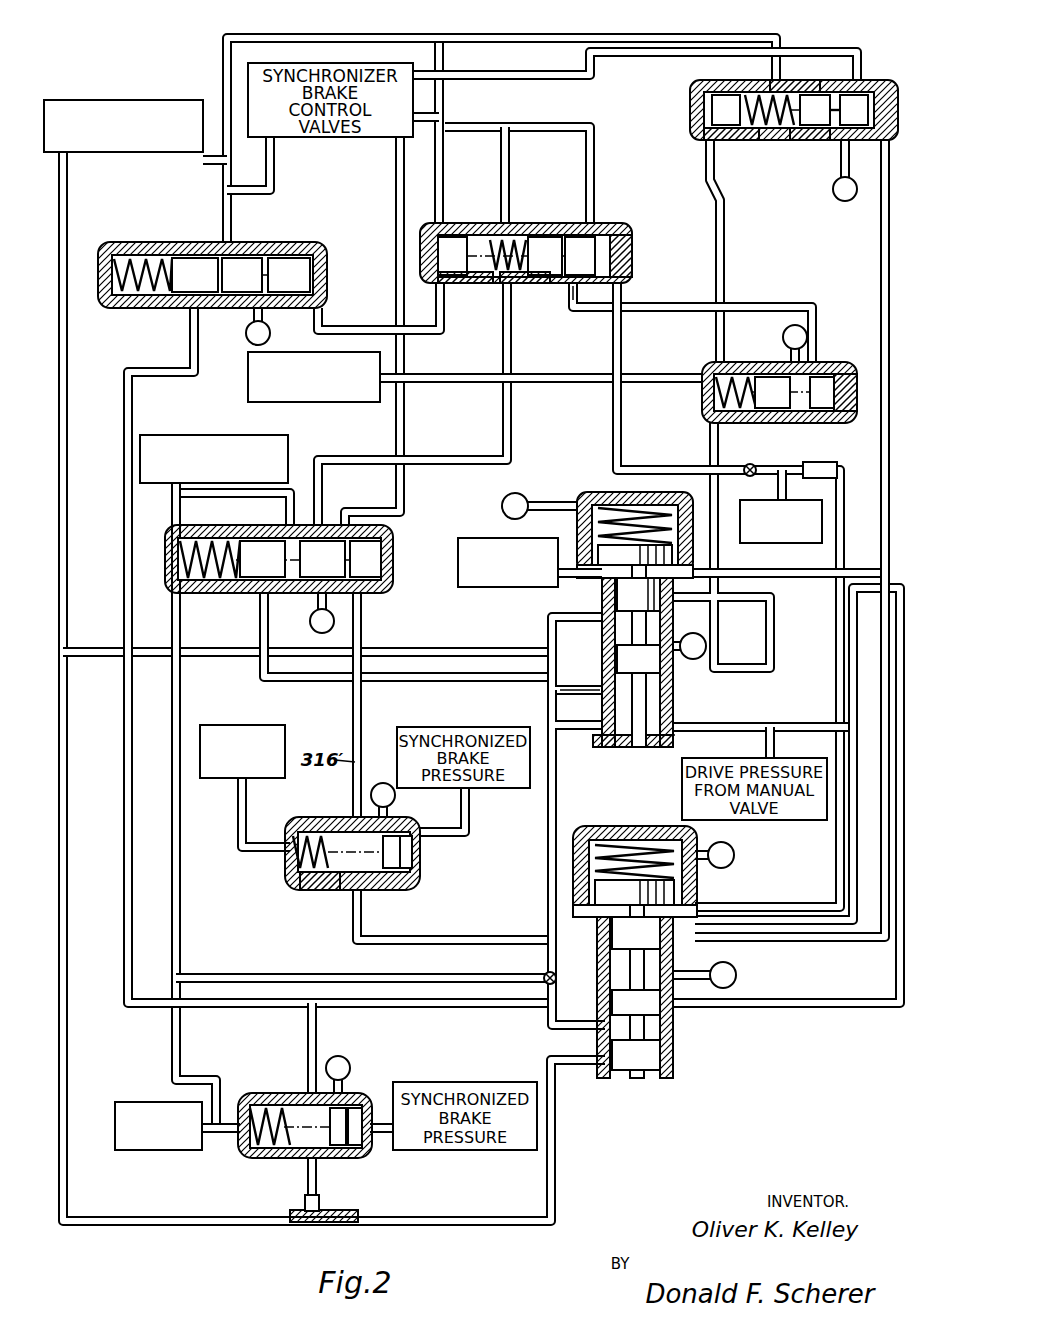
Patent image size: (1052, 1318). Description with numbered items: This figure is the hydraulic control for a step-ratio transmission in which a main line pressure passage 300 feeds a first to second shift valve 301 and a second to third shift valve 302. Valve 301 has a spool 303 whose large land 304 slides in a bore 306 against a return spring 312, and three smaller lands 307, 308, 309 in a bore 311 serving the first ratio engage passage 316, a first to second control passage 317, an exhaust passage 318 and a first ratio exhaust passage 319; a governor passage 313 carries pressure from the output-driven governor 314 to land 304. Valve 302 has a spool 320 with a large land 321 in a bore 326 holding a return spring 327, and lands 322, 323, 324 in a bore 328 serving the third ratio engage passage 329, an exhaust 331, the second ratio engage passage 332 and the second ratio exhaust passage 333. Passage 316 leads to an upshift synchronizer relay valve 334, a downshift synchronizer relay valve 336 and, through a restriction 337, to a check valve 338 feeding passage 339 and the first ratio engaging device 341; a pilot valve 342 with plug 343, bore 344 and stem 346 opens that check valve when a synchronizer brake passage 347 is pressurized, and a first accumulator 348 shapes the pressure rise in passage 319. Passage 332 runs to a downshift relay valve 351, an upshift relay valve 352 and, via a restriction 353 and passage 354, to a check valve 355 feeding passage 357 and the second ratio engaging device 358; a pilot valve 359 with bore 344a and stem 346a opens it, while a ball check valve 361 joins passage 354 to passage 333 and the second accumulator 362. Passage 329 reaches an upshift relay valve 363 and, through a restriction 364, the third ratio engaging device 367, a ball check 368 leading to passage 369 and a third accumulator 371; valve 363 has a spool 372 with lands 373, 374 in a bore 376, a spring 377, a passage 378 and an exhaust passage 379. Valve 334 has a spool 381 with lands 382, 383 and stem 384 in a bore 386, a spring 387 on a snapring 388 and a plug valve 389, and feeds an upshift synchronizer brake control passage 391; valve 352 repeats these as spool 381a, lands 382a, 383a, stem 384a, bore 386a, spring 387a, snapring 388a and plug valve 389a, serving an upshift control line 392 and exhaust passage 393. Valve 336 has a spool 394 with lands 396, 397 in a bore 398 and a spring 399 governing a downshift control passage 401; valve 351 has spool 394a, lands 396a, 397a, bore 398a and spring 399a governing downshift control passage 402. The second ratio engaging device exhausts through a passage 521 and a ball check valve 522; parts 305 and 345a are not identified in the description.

The main line pressure passage 300 is at (780, 718).
The first to second shift valve 301 is at (630, 748).
The second to third shift valve 302 is at (614, 1085).
The valve spool 303 is at (602, 690).
The large diameter land 304 is at (634, 578).
The piston 305 is at (600, 512).
The bore 306 is at (600, 510).
The land 307 is at (600, 588).
The land 308 is at (602, 655).
The land 309 is at (668, 735).
The bore 311 is at (550, 636).
The return spring 312 is at (612, 507).
The governor passage 313 is at (830, 582).
The output-driven governor 314 is at (465, 588).
The first ratio engage passage 316 is at (462, 680).
The first to second ratio control passage 317 is at (558, 797).
The exhaust passage 318 is at (708, 652).
The first ratio exhaust passage 319 is at (385, 458).
The valve spool 320 is at (648, 1035).
The large diameter land 321 is at (680, 893).
The land 322 is at (610, 930).
The land 323 is at (662, 1008).
The land 324 is at (645, 1068).
The bore 326 is at (605, 845).
The return spring 327 is at (712, 848).
The bore 328 is at (598, 975).
The third ratio engage passage 329 is at (775, 950).
The exhaust passage 331 is at (734, 985).
The second ratio engage passage 332 is at (488, 1005).
The second ratio exhaust passage 333 is at (444, 105).
The upshift synchronizer relay valve 334 is at (636, 258).
The downshift synchronizer relay valve 336 is at (393, 568).
The restriction 337 is at (360, 715).
The check valve 338 is at (330, 824).
The passage 339 is at (242, 853).
The first ratio engaging device 341 is at (228, 725).
The pilot valve 342 is at (402, 870).
The plug 343 is at (398, 835).
The bore 344 is at (413, 848).
The bore 344a is at (345, 1106).
The exhaust 345a is at (350, 1065).
The stem 346 is at (335, 890).
The stem 346a is at (345, 1160).
The synchronizer brake passage 347 is at (470, 832).
The first accumulator 348 is at (180, 435).
The downshift synchronizer relay valve 351 is at (330, 296).
The upshift synchronizer relay valve 352 is at (792, 205).
The restriction 353 is at (320, 1045).
The passage 354 is at (290, 1093).
The check valve 355 is at (265, 1148).
The passage 357 is at (214, 1140).
The second ratio engaging device 358 is at (118, 1102).
The pilot valve 359 is at (362, 1150).
The ball check valve 361 is at (300, 1210).
The second accumulator 362 is at (190, 110).
The upshift synchronizer relay valve 363 is at (835, 362).
The restriction 364 is at (815, 461).
The third ratio engaging device 367 is at (780, 543).
The ball check 368 is at (715, 466).
The passage 369 is at (444, 350).
The third accumulator 371 is at (308, 402).
The valve spool 372 is at (780, 376).
The land 373 is at (750, 463).
The land 374 is at (838, 372).
The bore 376 is at (712, 398).
The spring 377 is at (740, 368).
The passage 378 is at (745, 306).
The exhaust passage 379 is at (815, 310).
The valve spool 381 is at (585, 240).
The valve spool 381a is at (862, 92).
The land 382 is at (552, 240).
The land 382a is at (805, 128).
The land 383 is at (622, 236).
The land 383a is at (812, 92).
The stem 384 is at (500, 240).
The stem 384a is at (748, 92).
The bore 386 is at (575, 300).
The bore 386a is at (795, 132).
The spring 387 is at (530, 283).
The bias spring 387a is at (790, 160).
The snapring 388 is at (488, 283).
The snapring 388a is at (745, 132).
The plug valve 389 is at (460, 238).
The plug valve 389a is at (712, 110).
The upshift synchronizer brake control passage 391 is at (596, 168).
The upshift control line 392 is at (805, 52).
The exhaust passage 393 is at (848, 202).
The valve spool 394 is at (310, 618).
The valve spool 394a is at (243, 300).
The land 396 is at (270, 540).
The land 396a is at (205, 260).
The land 397 is at (348, 580).
The land 397a is at (318, 262).
The bore 398 is at (330, 540).
The bore 398a is at (250, 260).
The spring 399 is at (170, 582).
The spring 399a is at (112, 250).
The downshift control passage 401 is at (405, 512).
The downshift control passage 402 is at (278, 175).
The passage 521 is at (300, 978).
The ball check valve 522 is at (543, 976).